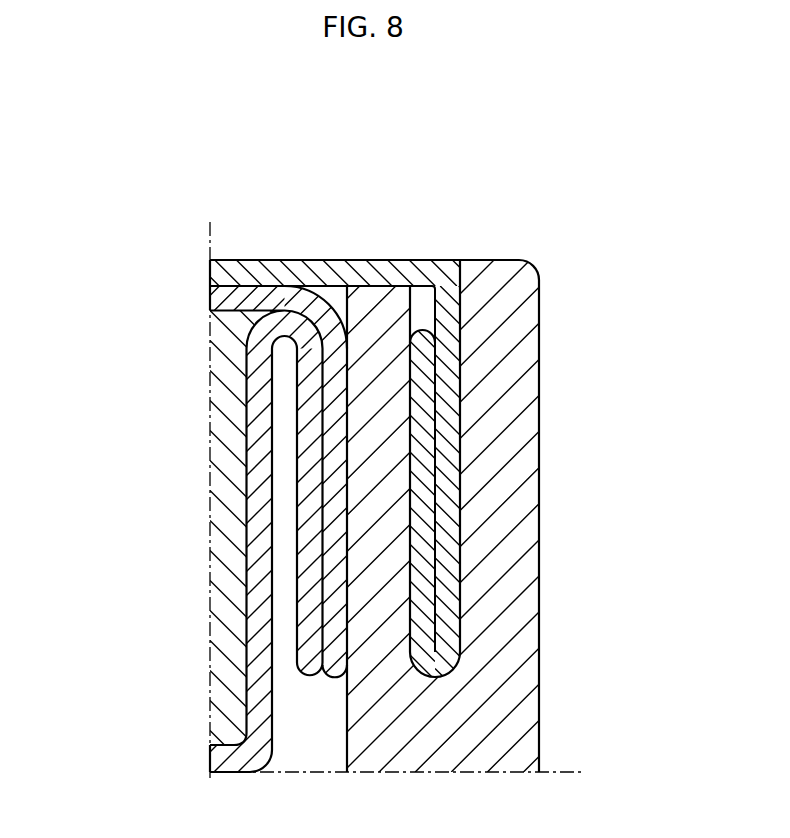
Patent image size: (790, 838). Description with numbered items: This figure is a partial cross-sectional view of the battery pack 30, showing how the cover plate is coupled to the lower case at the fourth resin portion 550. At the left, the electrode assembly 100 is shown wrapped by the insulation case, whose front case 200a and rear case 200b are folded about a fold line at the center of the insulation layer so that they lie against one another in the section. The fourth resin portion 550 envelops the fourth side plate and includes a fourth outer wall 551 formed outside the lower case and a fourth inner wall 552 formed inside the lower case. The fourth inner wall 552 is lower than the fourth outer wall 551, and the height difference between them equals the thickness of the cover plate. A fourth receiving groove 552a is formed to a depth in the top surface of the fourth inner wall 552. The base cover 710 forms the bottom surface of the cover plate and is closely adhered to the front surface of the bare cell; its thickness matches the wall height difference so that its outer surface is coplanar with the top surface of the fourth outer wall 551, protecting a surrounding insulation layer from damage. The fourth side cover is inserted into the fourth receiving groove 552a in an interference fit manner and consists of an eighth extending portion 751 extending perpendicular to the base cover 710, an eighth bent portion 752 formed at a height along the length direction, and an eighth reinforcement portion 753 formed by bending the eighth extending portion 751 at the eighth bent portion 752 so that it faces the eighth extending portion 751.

The battery pack 30 is at (228, 152).
The electrode assembly 100 is at (220, 488).
The front case 200a is at (308, 613).
The rear case 200b is at (222, 296).
The fourth resin portion 550 is at (345, 172).
The fourth outer wall 551 is at (497, 275).
The fourth inner wall 552 is at (377, 306).
The fourth receiving groove 552a is at (446, 302).
The base cover 710 is at (218, 274).
The eighth extending portion 751 is at (450, 511).
The eighth bent portion 752 is at (435, 672).
The eighth reinforcement portion 753 is at (423, 586).